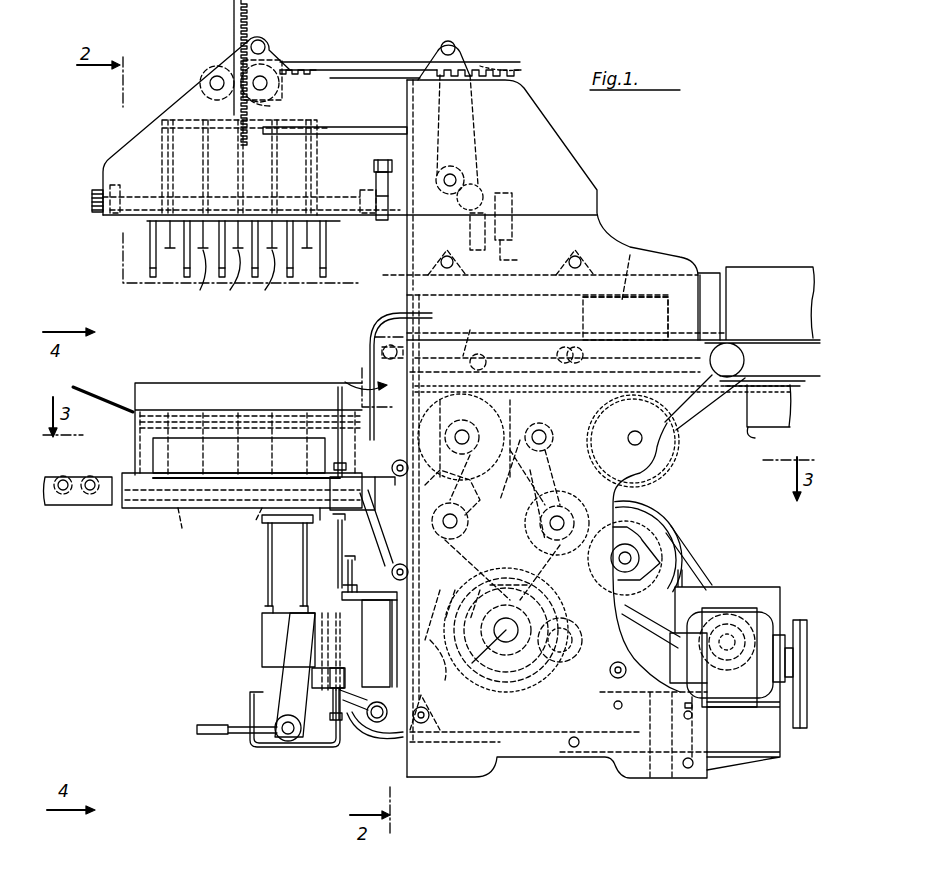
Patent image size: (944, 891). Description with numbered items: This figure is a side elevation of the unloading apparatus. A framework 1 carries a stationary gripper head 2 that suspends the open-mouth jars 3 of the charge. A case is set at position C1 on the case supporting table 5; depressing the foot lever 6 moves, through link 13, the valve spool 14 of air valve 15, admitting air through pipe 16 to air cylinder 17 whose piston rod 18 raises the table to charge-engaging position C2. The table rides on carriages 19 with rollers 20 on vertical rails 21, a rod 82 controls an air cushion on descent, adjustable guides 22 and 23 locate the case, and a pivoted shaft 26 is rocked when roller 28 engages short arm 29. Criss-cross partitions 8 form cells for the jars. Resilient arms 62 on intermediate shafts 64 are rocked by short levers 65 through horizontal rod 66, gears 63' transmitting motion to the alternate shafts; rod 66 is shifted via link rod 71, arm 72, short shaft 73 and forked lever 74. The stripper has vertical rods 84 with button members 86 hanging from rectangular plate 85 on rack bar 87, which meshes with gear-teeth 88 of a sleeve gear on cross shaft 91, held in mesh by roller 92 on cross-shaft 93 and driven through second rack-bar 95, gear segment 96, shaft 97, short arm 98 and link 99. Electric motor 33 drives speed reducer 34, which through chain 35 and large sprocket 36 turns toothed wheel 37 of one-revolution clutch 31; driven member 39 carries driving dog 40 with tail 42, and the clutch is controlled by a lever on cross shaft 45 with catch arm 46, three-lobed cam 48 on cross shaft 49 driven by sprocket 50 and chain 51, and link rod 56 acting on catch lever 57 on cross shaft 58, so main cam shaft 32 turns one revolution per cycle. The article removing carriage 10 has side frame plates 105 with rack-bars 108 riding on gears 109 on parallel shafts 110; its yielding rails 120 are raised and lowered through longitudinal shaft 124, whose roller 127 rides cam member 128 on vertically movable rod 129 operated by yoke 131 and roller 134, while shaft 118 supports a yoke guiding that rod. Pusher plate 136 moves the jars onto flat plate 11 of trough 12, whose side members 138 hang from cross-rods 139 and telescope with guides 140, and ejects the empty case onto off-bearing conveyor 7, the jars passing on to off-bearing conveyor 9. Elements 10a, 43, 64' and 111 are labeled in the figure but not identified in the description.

The framework 1 is at (560, 128).
The gripper head 2 is at (136, 228).
The open mouth jars 3 is at (280, 410).
The case supporting table 5 is at (148, 510).
The foot lever 6 is at (208, 737).
The off-bearing conveyor 7 is at (62, 505).
The partitions 8 is at (183, 418).
The off-bearing conveyor 9 is at (814, 338).
The article removing carriage 10 is at (625, 345).
The slide portion 10a is at (355, 386).
The flat plate 11 is at (585, 345).
The article receiving trough 12 is at (698, 268).
The link 13 is at (280, 700).
The valve spool 14 is at (339, 728).
The air valve 15 is at (349, 706).
The pipe 16 is at (315, 752).
The air cylinder 17 is at (268, 568).
The piston rod 18 is at (252, 514).
The carriages 19 is at (375, 530).
The rollers 20 is at (404, 486).
The vertical bars or rails 21 is at (405, 625).
The adjustable guide 22 is at (225, 478).
The adjustable guide 23 is at (392, 468).
The pivoted shaft 26 is at (190, 524).
The roller 28 is at (356, 561).
The short arm 29 is at (322, 522).
The one-revolution clutch 31 is at (485, 595).
The main cam shaft 32 is at (499, 633).
The electric motor 33 is at (730, 707).
The speed reducer 34 is at (778, 596).
The chain 35 is at (560, 732).
The large sprocket 36 is at (602, 685).
The toothed wheel 37 is at (506, 630).
The driven member 39 is at (446, 660).
The driving dog 40 is at (506, 627).
The tail 42 is at (575, 645).
The link 43 is at (446, 607).
The cross shaft 45 is at (560, 518).
The catch arm 46 is at (530, 500).
The three-lobed cam 48 is at (648, 556).
The cross shaft 49 is at (628, 555).
The sprocket 50 is at (660, 530).
The chain 51 is at (700, 566).
The link rod 56 is at (366, 503).
The catch lever 57 is at (451, 492).
The cross shaft 58 is at (458, 520).
The resilient arms 62 is at (184, 278).
The gears 63' is at (87, 186).
The intermediate shafts 64 is at (255, 165).
The bar 64' is at (256, 229).
The short levers 65 is at (366, 192).
The horizontal rod 66 is at (376, 162).
The link rod 71 is at (470, 240).
The arm 72 is at (476, 190).
The short shaft 73 is at (385, 222).
The upright forked lever 74 is at (378, 222).
The rod 82 is at (338, 560).
The vertical rods 84 is at (162, 160).
The rectangular plate 85 is at (320, 127).
The button members 86 is at (238, 263).
The rack bar 87 is at (234, 20).
The gear-teeth 88 is at (282, 86).
The cross shaft 91 is at (268, 104).
The roller 92 is at (215, 72).
The cross-shaft 93 is at (212, 90).
The second rack-bar 95 is at (398, 60).
The gear segment 96 is at (500, 72).
The shaft 97 is at (450, 172).
The short arm 98 is at (508, 194).
The link 99 is at (510, 246).
The side frame plates 105 is at (768, 430).
The rack-bar 108 is at (769, 406).
The gears 109 is at (420, 437).
The parallel shafts 110 is at (462, 430).
The roller 111 is at (460, 345).
The shaft 118 is at (542, 430).
The rails 120 is at (385, 337).
The longitudinal shaft 124 is at (476, 394).
The roller 127 is at (705, 404).
The cam member 128 is at (602, 378).
The vertically movable rod 129 is at (535, 470).
The operating yoke 131 is at (442, 712).
The roller 134 is at (510, 555).
The pusher plate 136 is at (382, 352).
The side members 138 is at (712, 285).
The cross-rods 139 is at (441, 262).
The upright sheet metal guides 140 is at (625, 295).
The case position C1 is at (135, 442).
The charge-engaging position C2 is at (122, 298).